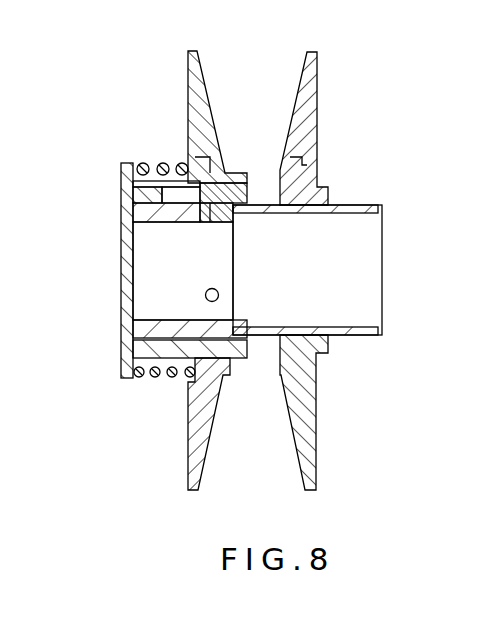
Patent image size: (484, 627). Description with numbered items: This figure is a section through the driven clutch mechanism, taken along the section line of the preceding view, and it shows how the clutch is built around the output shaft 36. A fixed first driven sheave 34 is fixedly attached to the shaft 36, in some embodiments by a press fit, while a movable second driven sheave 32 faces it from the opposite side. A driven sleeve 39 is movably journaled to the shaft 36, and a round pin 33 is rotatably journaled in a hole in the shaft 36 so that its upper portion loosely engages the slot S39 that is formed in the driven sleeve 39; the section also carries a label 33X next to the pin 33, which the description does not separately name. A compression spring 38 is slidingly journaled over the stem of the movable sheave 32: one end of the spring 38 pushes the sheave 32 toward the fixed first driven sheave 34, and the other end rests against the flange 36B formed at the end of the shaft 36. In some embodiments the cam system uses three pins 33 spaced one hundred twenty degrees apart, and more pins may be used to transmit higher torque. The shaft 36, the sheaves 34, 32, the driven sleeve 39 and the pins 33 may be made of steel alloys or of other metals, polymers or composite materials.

The movable second driven sheave 32 is at (203, 62).
The fixed first driven sheave 34 is at (310, 90).
The round pin 33 is at (240, 183).
The hub inner surface 33X is at (210, 223).
The output shaft 36 is at (357, 203).
The flange 36B is at (127, 163).
The slot S39 is at (182, 195).
The driven sleeve 39 is at (137, 350).
The compression spring 38 is at (155, 379).